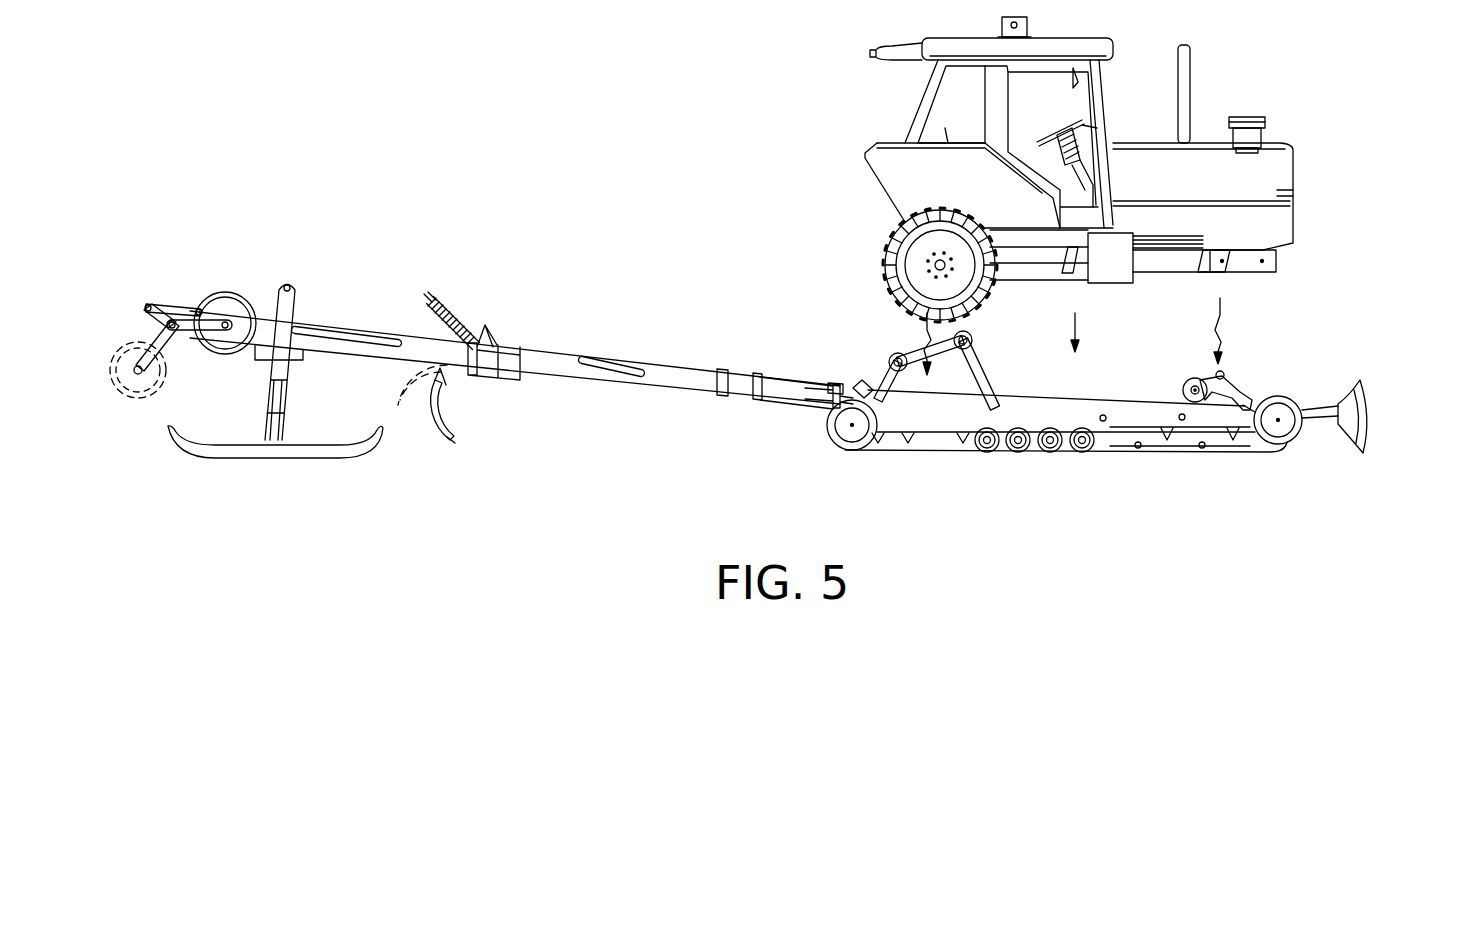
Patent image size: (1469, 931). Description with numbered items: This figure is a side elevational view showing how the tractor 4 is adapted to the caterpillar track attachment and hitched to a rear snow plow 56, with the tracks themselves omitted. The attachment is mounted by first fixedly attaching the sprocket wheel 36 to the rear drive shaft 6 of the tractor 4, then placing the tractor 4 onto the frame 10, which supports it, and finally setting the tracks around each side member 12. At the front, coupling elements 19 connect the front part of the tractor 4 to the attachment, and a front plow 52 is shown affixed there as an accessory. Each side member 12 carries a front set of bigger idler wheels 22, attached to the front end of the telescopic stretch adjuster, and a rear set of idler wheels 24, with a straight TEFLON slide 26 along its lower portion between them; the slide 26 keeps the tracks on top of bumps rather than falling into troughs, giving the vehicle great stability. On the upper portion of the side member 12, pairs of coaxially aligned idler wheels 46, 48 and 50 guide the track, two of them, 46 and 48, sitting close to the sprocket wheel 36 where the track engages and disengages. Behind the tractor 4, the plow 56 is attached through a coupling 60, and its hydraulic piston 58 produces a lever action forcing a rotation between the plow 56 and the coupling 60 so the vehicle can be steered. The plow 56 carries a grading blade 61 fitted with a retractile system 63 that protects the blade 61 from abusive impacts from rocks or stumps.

The tractor 4 is at (1144, 98).
The sprocket wheel 36 is at (878, 231).
The rear drive shaft 6 is at (936, 265).
The retractile system 63 is at (472, 318).
The rear snow plow 56 is at (648, 340).
The grading blade 61 is at (455, 438).
The coupling 60 is at (838, 380).
The hydraulic piston 58 is at (785, 392).
The idler wheels 46 is at (897, 352).
The idler wheels 48 is at (973, 338).
The rear set of idler wheels 24 is at (863, 447).
The frame 10 is at (955, 423).
The side member 12 is at (1145, 415).
The straight slide 26 is at (1113, 443).
The idler wheels 50 is at (1186, 383).
The coupling elements 19 is at (1223, 370).
The front set of idler wheels 22 is at (1293, 433).
The front plow 52 is at (1357, 408).